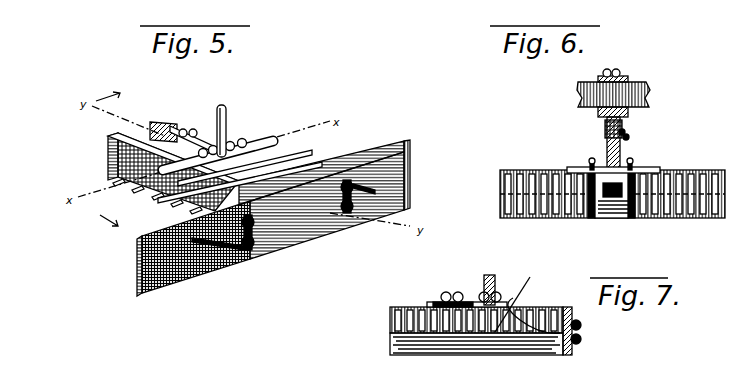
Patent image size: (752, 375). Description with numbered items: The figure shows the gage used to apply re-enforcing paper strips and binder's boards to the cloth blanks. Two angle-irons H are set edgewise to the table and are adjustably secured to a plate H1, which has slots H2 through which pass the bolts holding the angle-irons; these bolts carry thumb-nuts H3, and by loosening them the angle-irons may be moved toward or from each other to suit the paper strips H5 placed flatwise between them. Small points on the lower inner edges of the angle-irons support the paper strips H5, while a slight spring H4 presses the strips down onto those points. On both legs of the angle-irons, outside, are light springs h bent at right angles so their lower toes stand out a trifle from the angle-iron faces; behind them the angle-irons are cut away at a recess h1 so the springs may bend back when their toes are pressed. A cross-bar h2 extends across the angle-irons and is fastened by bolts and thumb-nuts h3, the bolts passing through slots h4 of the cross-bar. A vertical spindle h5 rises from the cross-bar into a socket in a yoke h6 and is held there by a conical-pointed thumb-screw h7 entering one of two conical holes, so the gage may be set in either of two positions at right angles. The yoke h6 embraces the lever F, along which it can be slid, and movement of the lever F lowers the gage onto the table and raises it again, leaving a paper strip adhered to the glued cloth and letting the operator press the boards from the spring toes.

In FIG. 5, the angle-irons H is at (300, 175).
In FIG. 6, the angle-irons H is at (589, 172).
In FIG. 5, the plate H1 is at (298, 228).
In FIG. 6, the plate H1 is at (688, 172).
In FIG. 5, the slots H2 is at (216, 254).
In FIG. 5, the thumb-nuts H3 is at (250, 250).
In FIG. 7, the thumb-nuts H3 is at (582, 339).
In FIG. 5, the spring H4 is at (266, 168).
In FIG. 6, the spring H4 is at (613, 218).
In FIG. 7, the spring H4 is at (476, 320).
In FIG. 5, the paper strips H5 is at (153, 124).
In FIG. 6, the paper strips H5 is at (612, 219).
In FIG. 5, the springs h is at (127, 183).
In FIG. 6, the springs h is at (523, 218).
In FIG. 6, the recess h1 is at (592, 218).
In FIG. 5, the cross-bar h2 is at (273, 141).
In FIG. 6, the cross-bar h2 is at (660, 170).
In FIG. 7, the cross-bar h2 is at (486, 298).
In FIG. 5, the thumb-nuts h3 is at (206, 148).
In FIG. 6, the thumb-nuts h3 is at (611, 157).
In FIG. 7, the thumb-nuts h3 is at (500, 295).
In FIG. 5, the slots h4 is at (189, 129).
In FIG. 6, the slots h4 is at (580, 170).
In FIG. 5, the vertical spindle h5 is at (226, 109).
In FIG. 6, the vertical spindle h5 is at (605, 127).
In FIG. 7, the vertical spindle h5 is at (495, 279).
In FIG. 6, the yoke h6 is at (625, 110).
In FIG. 6, the thumb-screw h7 is at (628, 135).
In FIG. 6, the lever F is at (620, 94).